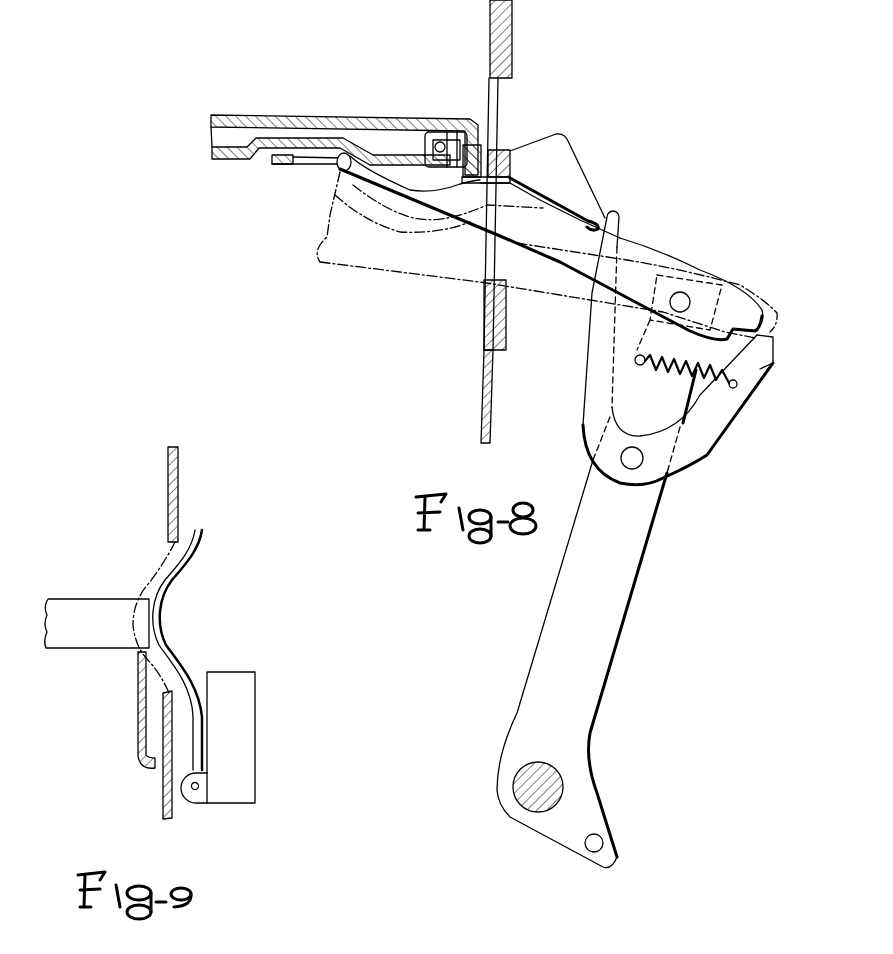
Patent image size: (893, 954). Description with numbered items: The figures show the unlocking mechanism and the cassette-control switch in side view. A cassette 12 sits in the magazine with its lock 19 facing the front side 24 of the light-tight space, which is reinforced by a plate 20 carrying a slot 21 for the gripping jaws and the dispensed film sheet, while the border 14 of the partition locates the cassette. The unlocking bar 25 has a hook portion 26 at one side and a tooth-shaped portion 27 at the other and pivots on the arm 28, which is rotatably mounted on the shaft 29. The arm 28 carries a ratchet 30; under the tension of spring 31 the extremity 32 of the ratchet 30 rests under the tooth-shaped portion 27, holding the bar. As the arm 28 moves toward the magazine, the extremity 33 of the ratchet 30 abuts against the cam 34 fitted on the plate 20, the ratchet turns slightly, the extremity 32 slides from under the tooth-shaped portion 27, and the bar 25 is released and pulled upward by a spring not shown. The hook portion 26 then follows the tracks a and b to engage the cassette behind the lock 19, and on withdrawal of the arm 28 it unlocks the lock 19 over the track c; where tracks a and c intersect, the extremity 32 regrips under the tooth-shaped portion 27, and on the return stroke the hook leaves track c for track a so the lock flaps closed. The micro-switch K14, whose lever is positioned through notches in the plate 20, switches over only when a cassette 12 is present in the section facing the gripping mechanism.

In FIG. 8, the cassette 12 is at (228, 139).
In FIG. 9, the cassette 12 is at (89, 640).
In FIG. 9, the border 14 is at (138, 728).
In FIG. 8, the lock 19 is at (286, 170).
In FIG. 8, the plate 20 is at (505, 62).
In FIG. 8, the slot 21 is at (498, 122).
In FIG. 8, the front side 24 is at (493, 416).
In FIG. 9, the front side 24 is at (163, 812).
In FIG. 8, the unlocking bar 25 is at (586, 272).
In FIG. 8, the hook portion 26 is at (337, 176).
In FIG. 8, the tooth-shaped portion 27 is at (757, 326).
In FIG. 8, the arm 28 is at (594, 708).
In FIG. 8, the shaft 29 is at (530, 808).
In FIG. 8, the ratchet 30 is at (672, 470).
In FIG. 8, the spring 31 is at (684, 377).
In FIG. 8, the extremity 32 is at (790, 359).
In FIG. 8, the extremity 33 is at (618, 221).
In FIG. 8, the cam 34 is at (583, 187).
In FIG. 9, the micro-switch K14 is at (218, 808).
In FIG. 8, the track a is at (565, 258).
In FIG. 8, the track b is at (332, 217).
In FIG. 8, the track c is at (537, 266).